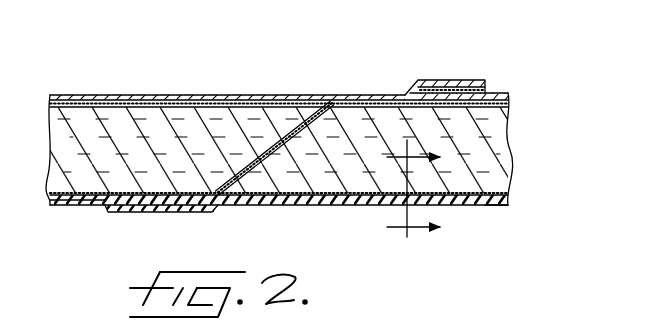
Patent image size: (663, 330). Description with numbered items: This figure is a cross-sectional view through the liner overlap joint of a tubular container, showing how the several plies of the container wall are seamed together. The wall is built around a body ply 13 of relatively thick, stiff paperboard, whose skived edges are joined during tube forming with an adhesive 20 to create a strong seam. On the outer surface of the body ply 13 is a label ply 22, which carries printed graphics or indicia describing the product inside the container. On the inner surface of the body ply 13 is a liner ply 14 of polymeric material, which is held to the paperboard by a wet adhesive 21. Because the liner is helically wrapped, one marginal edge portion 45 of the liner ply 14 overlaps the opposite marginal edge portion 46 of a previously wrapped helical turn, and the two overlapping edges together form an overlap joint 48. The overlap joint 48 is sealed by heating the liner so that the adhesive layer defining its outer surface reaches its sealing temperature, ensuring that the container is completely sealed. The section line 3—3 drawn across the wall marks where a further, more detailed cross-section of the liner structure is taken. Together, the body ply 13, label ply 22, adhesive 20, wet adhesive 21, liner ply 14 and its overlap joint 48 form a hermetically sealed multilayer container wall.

The body ply 13 is at (173, 127).
The label ply 22 is at (94, 97).
The adhesive 20 is at (292, 133).
The marginal edge portion 45 is at (173, 192).
The wet adhesive 21 is at (125, 194).
The opposite marginal edge portion 46 is at (130, 211).
The overlap joint 48 is at (162, 219).
The liner ply 14 is at (475, 198).
The section line 3- 3 is at (396, 193).